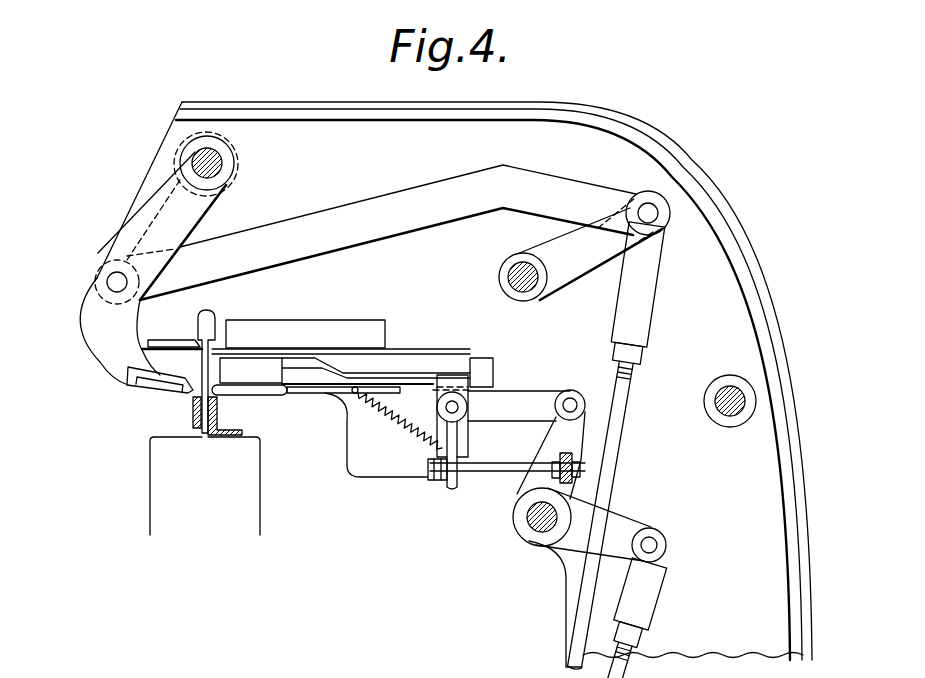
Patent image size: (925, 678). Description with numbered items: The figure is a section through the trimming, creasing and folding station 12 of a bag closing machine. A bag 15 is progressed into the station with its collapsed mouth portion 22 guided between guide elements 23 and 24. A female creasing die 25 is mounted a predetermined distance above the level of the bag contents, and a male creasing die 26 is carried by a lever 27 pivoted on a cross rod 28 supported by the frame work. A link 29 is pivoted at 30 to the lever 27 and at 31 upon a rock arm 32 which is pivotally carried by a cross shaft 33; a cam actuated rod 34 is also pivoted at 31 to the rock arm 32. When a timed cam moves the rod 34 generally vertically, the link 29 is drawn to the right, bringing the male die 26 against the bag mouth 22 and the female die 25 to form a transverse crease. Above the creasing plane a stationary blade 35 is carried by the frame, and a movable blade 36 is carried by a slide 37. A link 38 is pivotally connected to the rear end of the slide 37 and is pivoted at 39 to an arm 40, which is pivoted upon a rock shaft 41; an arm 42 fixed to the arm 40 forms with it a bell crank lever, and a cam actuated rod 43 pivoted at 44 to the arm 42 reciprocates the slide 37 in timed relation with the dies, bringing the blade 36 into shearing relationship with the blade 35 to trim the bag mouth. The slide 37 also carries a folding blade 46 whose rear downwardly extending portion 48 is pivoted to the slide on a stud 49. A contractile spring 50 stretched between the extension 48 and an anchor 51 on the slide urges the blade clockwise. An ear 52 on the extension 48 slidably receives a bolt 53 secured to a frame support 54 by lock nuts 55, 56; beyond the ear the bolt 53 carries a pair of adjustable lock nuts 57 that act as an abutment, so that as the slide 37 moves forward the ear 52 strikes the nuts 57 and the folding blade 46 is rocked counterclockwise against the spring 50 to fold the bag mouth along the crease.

The station 12 is at (284, 148).
The bag 15 is at (152, 470).
The collapsed mouth portion 22 is at (200, 359).
The guide element 23 is at (217, 421).
The guide element 24 is at (194, 414).
The female creasing die 25 is at (275, 395).
The male creasing die 26 is at (146, 388).
The lever 27 is at (86, 300).
The cross rod 28 is at (198, 158).
The link 29 is at (312, 212).
The pivot 30 is at (115, 279).
The pivot 31 is at (652, 210).
The rock arm 32 is at (592, 266).
The cross shaft 33 is at (518, 276).
The cam actuated rod 34 is at (654, 293).
The stationary blade 35 is at (168, 340).
The movable blade 36 is at (265, 345).
The slide 37 is at (306, 372).
The link 38 is at (508, 389).
The pivot 39 is at (571, 398).
The arm 40 is at (586, 431).
The rock shaft 41 is at (538, 533).
The arm 42 is at (622, 526).
The cam actuated rod 43 is at (648, 591).
The pivot 44 is at (667, 541).
The folding blade 46 is at (345, 370).
The downwardly extending portion 48 is at (440, 427).
The stud 49 is at (453, 401).
The contractile spring 50 is at (389, 412).
The anchor 51 is at (345, 404).
The ear 52 is at (468, 447).
The bolt 53 is at (488, 473).
The support 54 is at (575, 456).
The lock nut 55 is at (550, 465).
The lock nut 56 is at (582, 470).
The adjustable lock nuts 57 is at (440, 482).